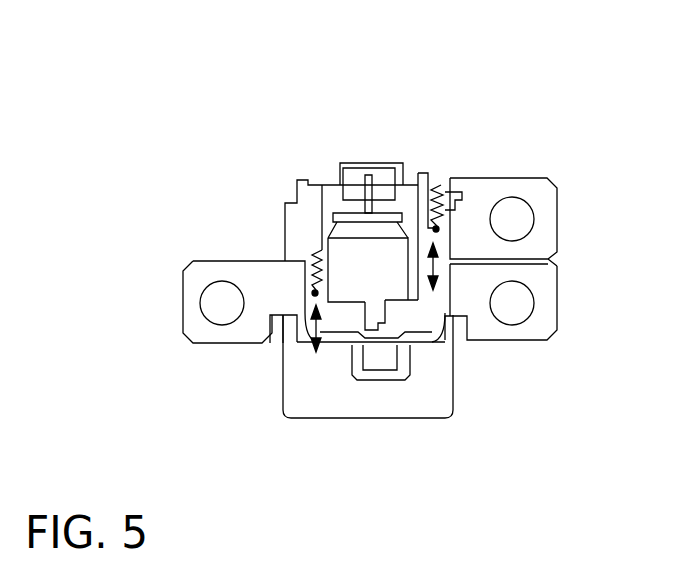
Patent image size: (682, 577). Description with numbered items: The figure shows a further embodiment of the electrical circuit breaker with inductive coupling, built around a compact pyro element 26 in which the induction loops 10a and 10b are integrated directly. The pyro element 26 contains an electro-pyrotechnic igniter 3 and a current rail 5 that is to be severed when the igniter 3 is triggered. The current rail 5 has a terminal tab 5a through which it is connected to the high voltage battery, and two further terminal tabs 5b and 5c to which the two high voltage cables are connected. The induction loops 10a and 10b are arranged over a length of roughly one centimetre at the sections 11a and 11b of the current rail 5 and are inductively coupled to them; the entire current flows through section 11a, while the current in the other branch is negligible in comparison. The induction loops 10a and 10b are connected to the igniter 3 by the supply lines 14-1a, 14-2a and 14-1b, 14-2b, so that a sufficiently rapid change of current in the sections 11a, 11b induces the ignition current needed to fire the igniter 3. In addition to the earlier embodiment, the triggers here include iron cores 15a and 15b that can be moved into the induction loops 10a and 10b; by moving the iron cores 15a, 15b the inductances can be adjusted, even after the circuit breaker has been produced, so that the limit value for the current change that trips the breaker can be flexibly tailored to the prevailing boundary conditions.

The electro-pyrotechnic igniter 3 is at (368, 162).
The current rail 5 is at (359, 261).
The terminal tab 5a is at (193, 317).
The terminal tab 5b is at (540, 220).
The terminal tab 5c is at (538, 328).
The induction loop 10a is at (312, 250).
The induction loop 10b is at (441, 183).
The section of the current rail 11a is at (297, 268).
The section of the current rail 11b is at (463, 197).
The supply line 14-1a is at (322, 203).
The supply line 14-1b is at (404, 174).
The supply line 14-2a is at (401, 300).
The supply line 14-2b is at (336, 185).
The iron core 15a is at (315, 291).
The iron core 15b is at (436, 229).
The pyro element 26 is at (338, 402).